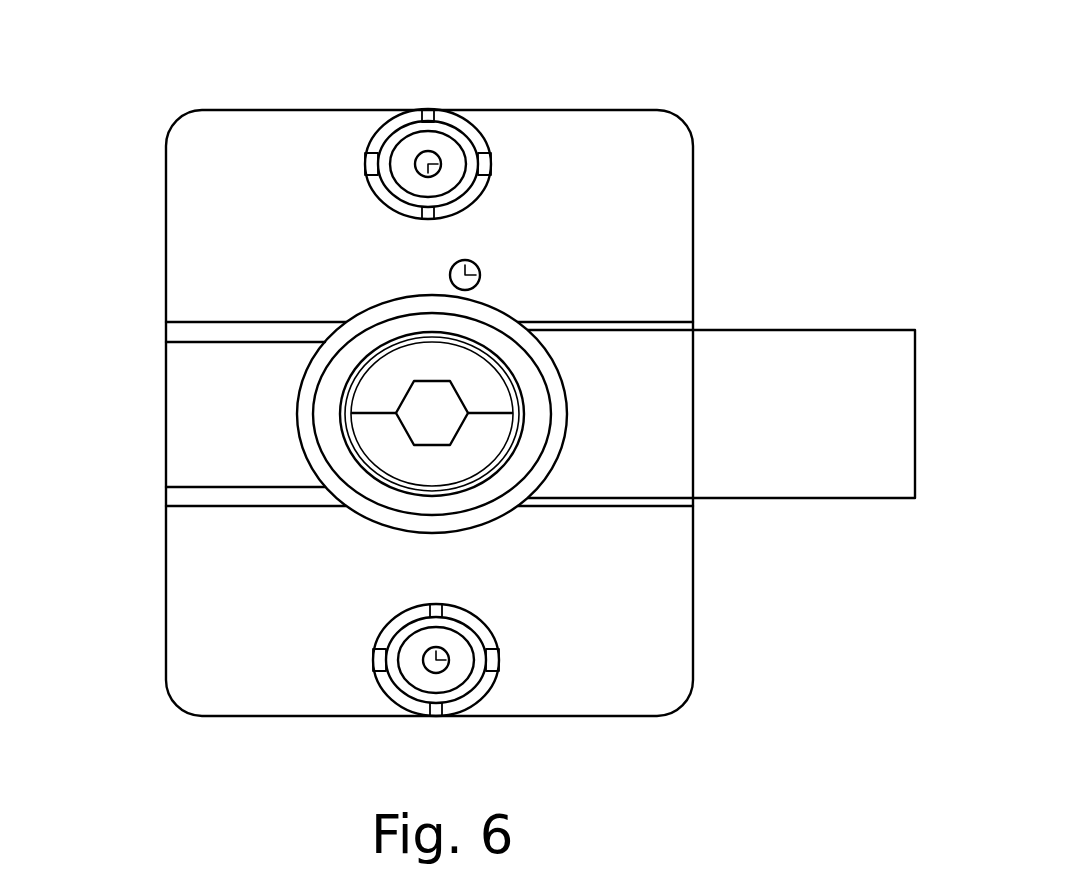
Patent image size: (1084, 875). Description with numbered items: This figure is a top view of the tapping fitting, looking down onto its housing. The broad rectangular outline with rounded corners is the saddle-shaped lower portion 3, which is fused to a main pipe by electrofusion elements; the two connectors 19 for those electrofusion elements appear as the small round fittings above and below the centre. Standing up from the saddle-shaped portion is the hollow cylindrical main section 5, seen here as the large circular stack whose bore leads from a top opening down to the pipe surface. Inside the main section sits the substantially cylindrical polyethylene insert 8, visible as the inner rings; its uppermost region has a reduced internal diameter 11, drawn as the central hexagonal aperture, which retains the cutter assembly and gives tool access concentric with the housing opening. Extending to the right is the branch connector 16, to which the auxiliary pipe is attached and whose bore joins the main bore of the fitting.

The saddle-shaped lower portion 3 is at (195, 263).
The cylindrical main section 5 is at (307, 425).
The insert 8 is at (502, 480).
The reduced internal diameter 11 is at (487, 392).
The branch connector 16 is at (763, 457).
The connectors 19 is at (442, 156).